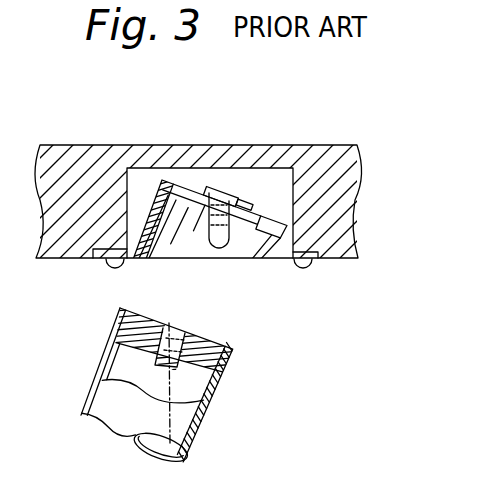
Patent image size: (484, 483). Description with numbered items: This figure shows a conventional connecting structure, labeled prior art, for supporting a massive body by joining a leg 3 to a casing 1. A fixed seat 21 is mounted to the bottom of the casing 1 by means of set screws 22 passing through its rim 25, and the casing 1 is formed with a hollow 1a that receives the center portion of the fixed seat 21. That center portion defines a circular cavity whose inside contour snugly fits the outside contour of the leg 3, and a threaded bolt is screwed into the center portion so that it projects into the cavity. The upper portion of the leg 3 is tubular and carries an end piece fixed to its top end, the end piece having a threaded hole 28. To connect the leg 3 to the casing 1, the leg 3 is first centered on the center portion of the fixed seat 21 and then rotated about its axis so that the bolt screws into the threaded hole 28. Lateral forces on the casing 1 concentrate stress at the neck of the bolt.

The casing 1 is at (327, 155).
The hollow 1a is at (271, 168).
The fixed seat 21 is at (209, 207).
The set screws 22 is at (310, 262).
The rim 25 is at (96, 251).
The threaded hole 28 is at (184, 342).
The leg 3 is at (162, 380).